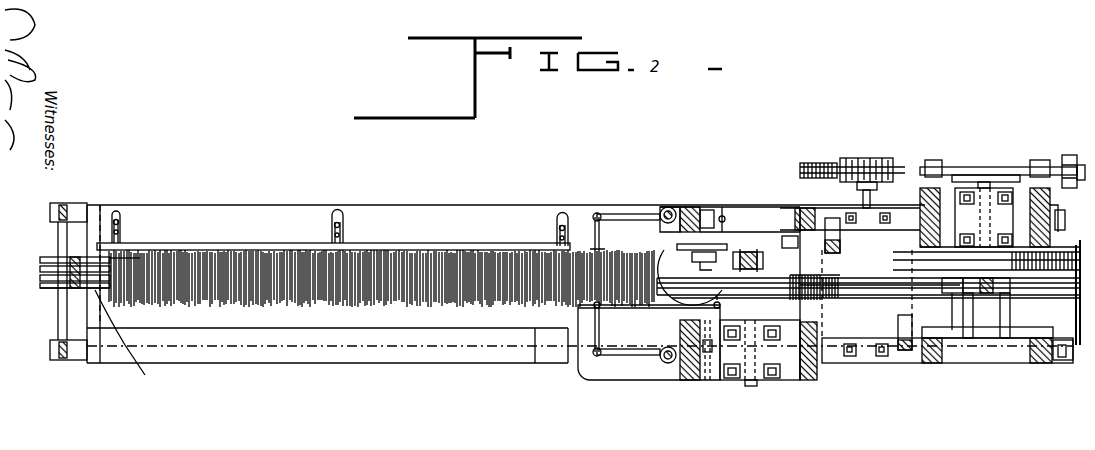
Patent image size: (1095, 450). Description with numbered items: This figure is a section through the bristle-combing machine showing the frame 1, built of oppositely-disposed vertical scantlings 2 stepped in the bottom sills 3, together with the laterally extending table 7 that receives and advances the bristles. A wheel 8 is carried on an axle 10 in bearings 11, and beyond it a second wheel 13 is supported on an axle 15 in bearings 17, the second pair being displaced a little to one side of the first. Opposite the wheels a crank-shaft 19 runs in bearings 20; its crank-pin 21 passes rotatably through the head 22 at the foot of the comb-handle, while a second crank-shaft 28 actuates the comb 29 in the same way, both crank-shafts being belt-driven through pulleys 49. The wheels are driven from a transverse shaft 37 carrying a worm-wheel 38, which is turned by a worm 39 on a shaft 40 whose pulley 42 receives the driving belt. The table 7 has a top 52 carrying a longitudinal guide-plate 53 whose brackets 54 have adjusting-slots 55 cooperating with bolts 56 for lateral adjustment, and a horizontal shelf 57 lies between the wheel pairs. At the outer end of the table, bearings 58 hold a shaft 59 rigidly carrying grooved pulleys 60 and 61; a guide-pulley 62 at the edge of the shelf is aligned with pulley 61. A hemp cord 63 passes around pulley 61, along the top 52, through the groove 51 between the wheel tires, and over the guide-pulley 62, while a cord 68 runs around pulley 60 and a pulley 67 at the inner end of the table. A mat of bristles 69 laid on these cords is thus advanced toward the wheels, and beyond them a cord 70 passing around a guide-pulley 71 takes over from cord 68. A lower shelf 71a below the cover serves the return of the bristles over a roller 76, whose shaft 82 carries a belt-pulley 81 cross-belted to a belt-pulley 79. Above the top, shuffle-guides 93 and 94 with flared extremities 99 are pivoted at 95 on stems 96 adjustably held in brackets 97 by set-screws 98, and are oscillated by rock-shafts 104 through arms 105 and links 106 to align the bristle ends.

The frame 1 is at (878, 363).
The vertical members or scantlings 2 is at (805, 208).
The bottom sills 3 is at (1020, 363).
The table 7 is at (340, 363).
The wheel 8 is at (838, 297).
The axle 10 is at (751, 386).
The bearings 11 is at (775, 350).
The wheel 13 is at (1055, 275).
The axle 15 is at (985, 182).
The bearings 17 is at (1016, 212).
The crank-shaft 19 is at (790, 207).
The bearings 20 is at (707, 210).
The crank-pin 21 is at (724, 214).
The head 22 is at (748, 250).
The crank-shaft 28 is at (987, 315).
The comb 29 is at (1010, 285).
The transversely-disposed shaft 37 is at (905, 170).
The worm-wheel 38 is at (818, 163).
The worm 39 is at (870, 158).
The shaft 40 is at (960, 167).
The pulley 42 is at (1068, 155).
The pulleys 49 is at (832, 218).
The groove 51 is at (870, 283).
The top 52 is at (240, 243).
The guide-plate 53 is at (290, 245).
The brackets 54 is at (118, 215).
The adjusting-slots 55 is at (120, 232).
The bolts 56 is at (112, 225).
The shelf 57 is at (850, 363).
The bearings 58 is at (60, 203).
The shaft 59 is at (66, 228).
The grooved pulley 60 is at (42, 259).
The grooved pulley 61 is at (50, 290).
The guide-pulley 62 is at (950, 295).
The cord 63 is at (145, 375).
The pulley 67 is at (680, 244).
The cord 68 is at (115, 260).
The mat of bristles 69 is at (280, 300).
The cord 70 is at (905, 262).
The guide-pulley 71 is at (812, 300).
The lower shelf 71a is at (407, 363).
The roller 76 is at (1065, 360).
The belt-pulley 79 is at (980, 175).
The belt-pulley 81 is at (1081, 165).
The shaft 82 is at (1068, 215).
The shuffle-guide 93 is at (650, 308).
The shuffle-guide 94 is at (650, 245).
The pivot 95 is at (692, 256).
The stems 96 is at (705, 375).
The brackets 97 is at (700, 210).
The set-screws 98 is at (722, 215).
The flared extremities 99 is at (597, 215).
The rock-shafts 104 is at (670, 207).
The arms 105 is at (640, 214).
The links 106 is at (610, 230).